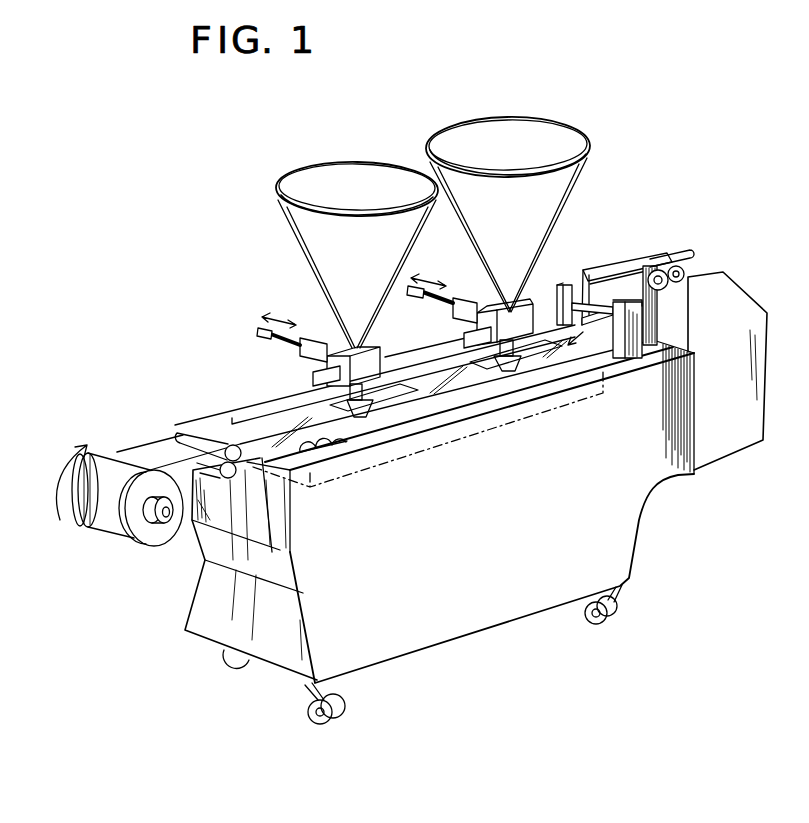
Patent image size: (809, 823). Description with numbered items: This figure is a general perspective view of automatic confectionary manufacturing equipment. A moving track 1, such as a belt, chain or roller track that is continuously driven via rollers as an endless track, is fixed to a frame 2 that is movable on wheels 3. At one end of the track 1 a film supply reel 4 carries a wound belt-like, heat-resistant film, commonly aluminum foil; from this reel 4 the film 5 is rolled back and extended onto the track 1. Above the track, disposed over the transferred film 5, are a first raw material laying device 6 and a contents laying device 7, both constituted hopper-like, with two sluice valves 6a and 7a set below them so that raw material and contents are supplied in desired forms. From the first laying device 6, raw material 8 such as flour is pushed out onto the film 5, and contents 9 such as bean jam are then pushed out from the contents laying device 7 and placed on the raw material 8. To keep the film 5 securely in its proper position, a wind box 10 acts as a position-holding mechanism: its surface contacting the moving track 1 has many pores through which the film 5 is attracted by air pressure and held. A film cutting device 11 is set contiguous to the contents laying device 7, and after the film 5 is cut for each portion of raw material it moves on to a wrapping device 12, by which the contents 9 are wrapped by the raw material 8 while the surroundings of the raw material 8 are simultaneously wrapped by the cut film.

The moving track 1 is at (323, 445).
The frame 2 is at (395, 497).
The wheels 3 is at (603, 628).
The film supply reel 4 is at (147, 538).
The film 5 is at (163, 462).
The first raw material laying device 6 is at (330, 272).
The sluice valve 6a is at (320, 368).
The contents laying device 7 is at (517, 208).
The sluice valve 7a is at (512, 320).
The raw material 8 is at (395, 397).
The contents 9 is at (527, 360).
The wind box 10 is at (482, 425).
The film cutting device 11 is at (597, 275).
The wrapping device 12 is at (653, 257).